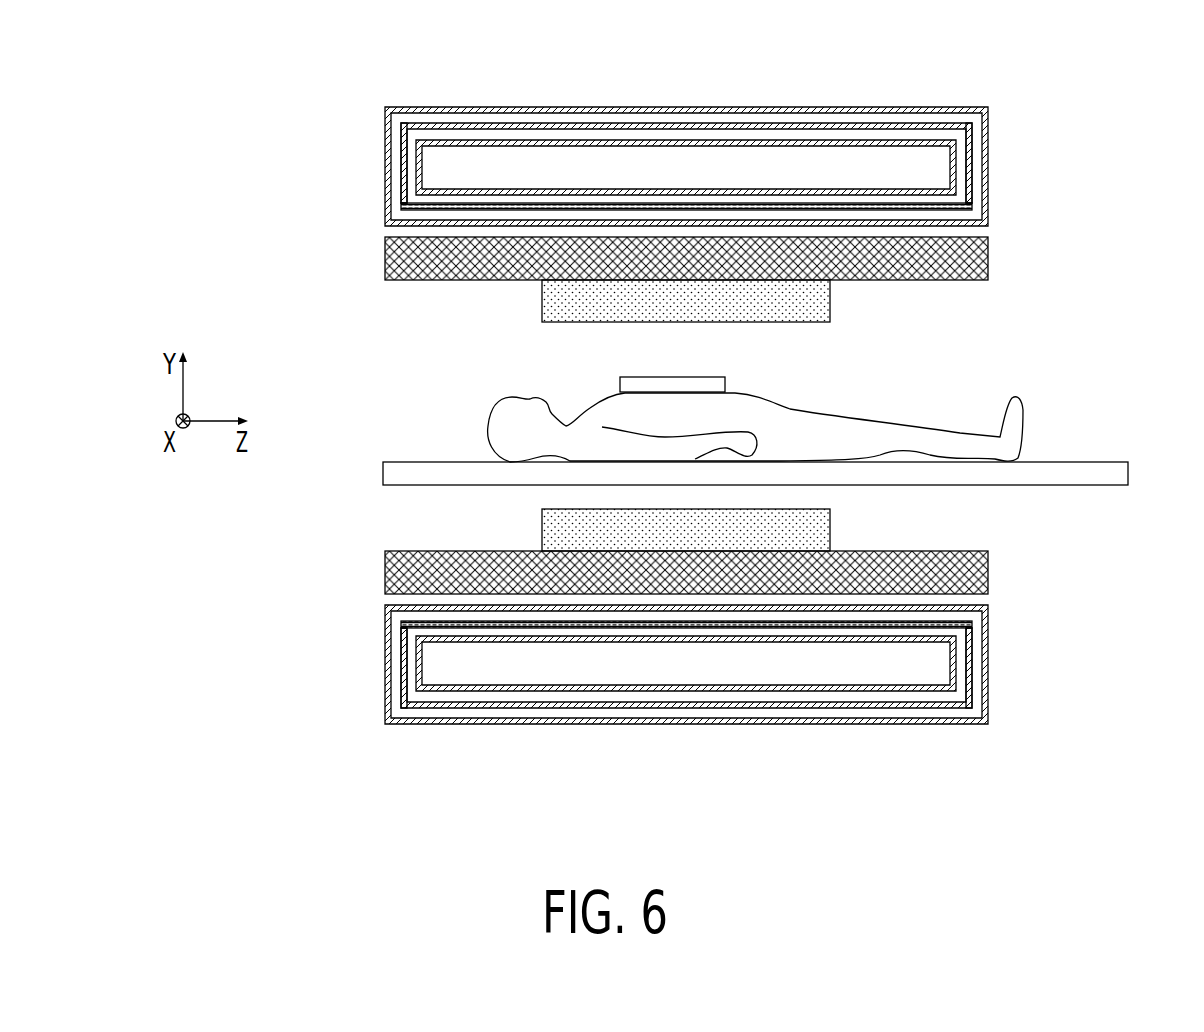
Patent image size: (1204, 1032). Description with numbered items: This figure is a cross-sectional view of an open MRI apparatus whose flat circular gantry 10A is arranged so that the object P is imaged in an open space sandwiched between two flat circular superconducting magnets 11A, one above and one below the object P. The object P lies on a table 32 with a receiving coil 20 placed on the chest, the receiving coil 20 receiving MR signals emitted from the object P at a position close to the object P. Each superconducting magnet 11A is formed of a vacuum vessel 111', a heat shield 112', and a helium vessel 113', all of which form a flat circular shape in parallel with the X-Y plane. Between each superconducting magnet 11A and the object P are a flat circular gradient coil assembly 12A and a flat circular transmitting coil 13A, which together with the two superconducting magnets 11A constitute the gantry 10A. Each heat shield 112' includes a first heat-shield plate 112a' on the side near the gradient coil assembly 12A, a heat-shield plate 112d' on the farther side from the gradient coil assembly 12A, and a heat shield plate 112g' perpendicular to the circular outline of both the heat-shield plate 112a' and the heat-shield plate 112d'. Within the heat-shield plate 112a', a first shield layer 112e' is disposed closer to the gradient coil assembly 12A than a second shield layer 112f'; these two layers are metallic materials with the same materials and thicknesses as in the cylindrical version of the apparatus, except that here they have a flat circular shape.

The flat circular gantry 10A is at (992, 384).
The flat circular superconducting magnet 11A is at (992, 90).
The vacuum vessel 111' is at (734, 415).
The heat shield 112' is at (687, 418).
The first heat-shield plate 112a' is at (681, 415).
The heat-shield plate 112d' is at (686, 418).
The first shield layer 112e' is at (748, 415).
The second shield layer 112f' is at (747, 415).
The heat shield plate 112g' is at (687, 415).
The helium vessel 113' is at (623, 415).
The gradient coil assembly 12A is at (988, 260).
The transmitting coil 13A is at (832, 301).
The receiving coil 20 is at (727, 385).
The table top 32 is at (1087, 462).
The object P is at (875, 418).